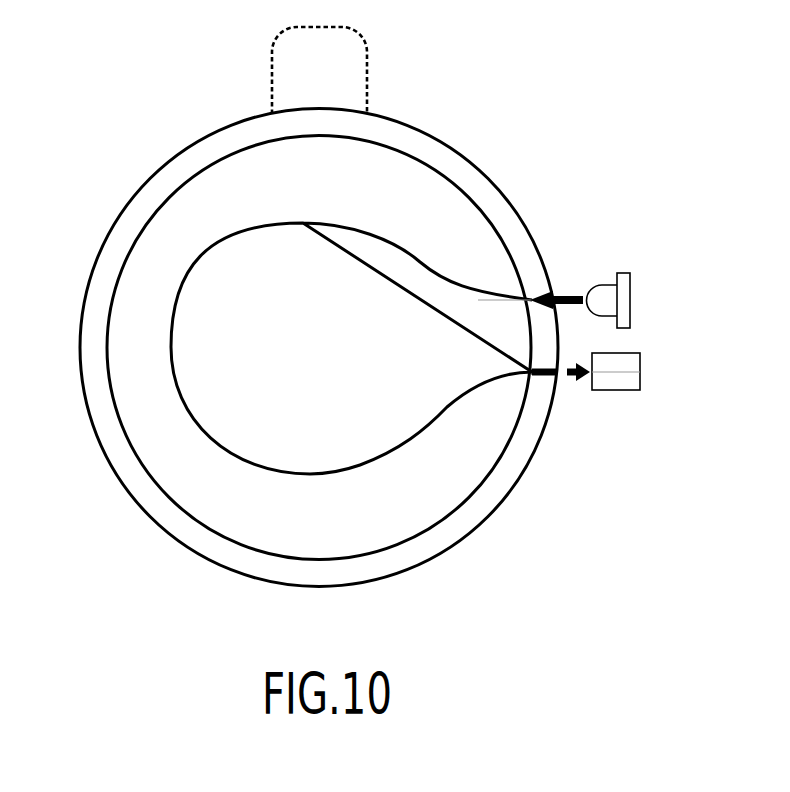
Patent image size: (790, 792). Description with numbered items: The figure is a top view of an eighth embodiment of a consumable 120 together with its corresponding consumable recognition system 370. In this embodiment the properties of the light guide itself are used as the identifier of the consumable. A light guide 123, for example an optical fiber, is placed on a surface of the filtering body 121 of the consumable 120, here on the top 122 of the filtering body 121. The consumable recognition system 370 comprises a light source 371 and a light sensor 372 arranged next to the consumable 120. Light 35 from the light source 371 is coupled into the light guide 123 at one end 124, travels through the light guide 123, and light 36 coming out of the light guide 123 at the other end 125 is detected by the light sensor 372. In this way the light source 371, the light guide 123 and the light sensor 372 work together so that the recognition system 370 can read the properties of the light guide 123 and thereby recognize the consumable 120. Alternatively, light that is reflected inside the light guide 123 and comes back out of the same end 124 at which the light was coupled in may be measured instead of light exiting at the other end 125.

The consumable 120 is at (317, 322).
The filtering body 121 is at (135, 197).
The top 122 is at (223, 180).
The light guide 123 is at (430, 255).
The end 124 is at (560, 308).
The other end 125 is at (560, 377).
The light 35 is at (568, 293).
The light 36 is at (565, 377).
The consumable recognition system 370 is at (650, 382).
The light source 371 is at (630, 292).
The light sensor 372 is at (640, 372).